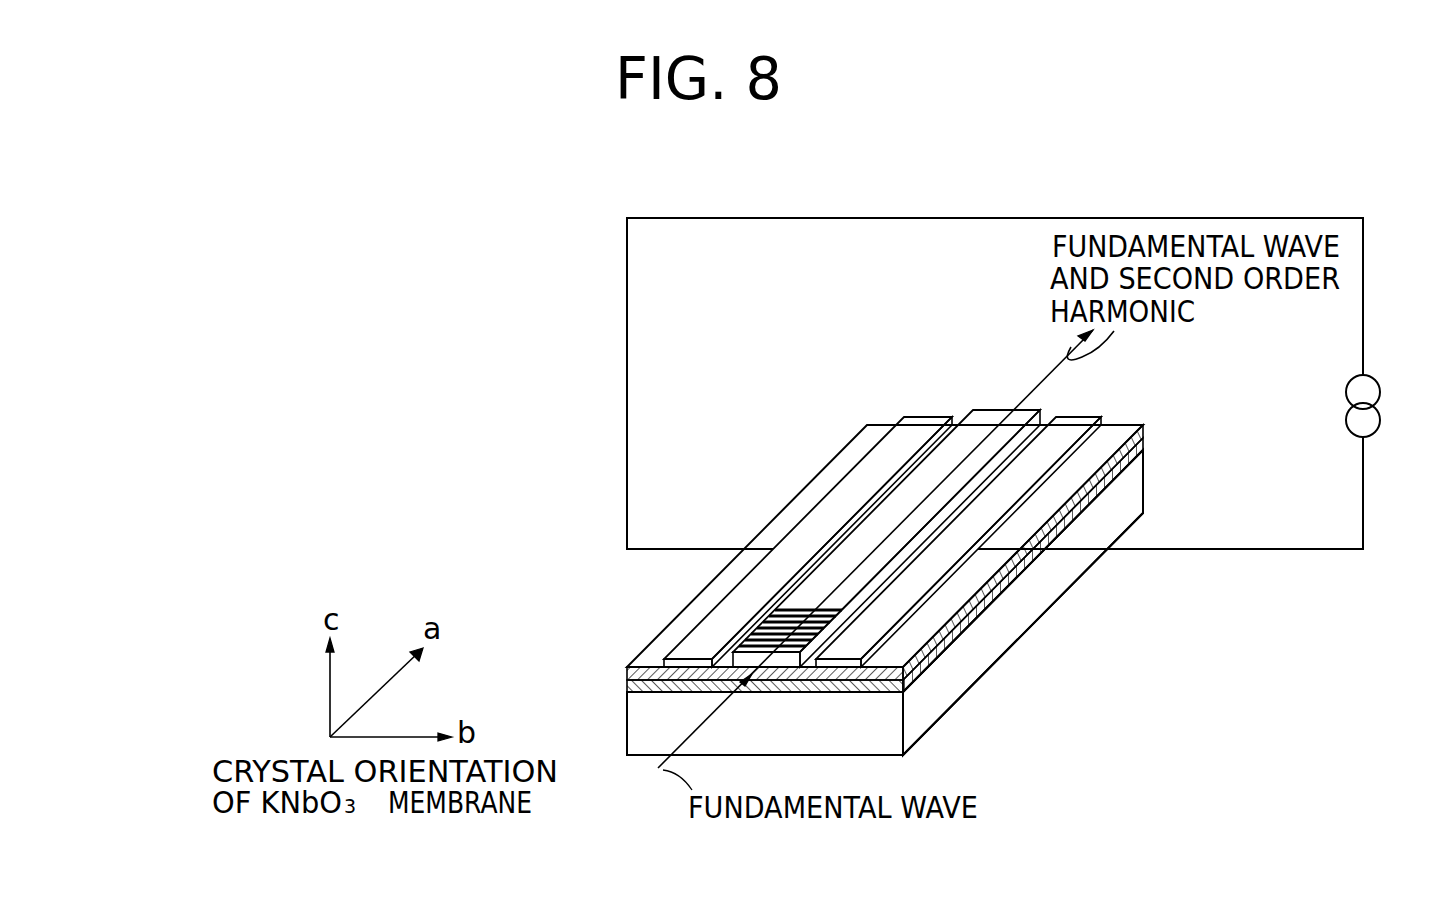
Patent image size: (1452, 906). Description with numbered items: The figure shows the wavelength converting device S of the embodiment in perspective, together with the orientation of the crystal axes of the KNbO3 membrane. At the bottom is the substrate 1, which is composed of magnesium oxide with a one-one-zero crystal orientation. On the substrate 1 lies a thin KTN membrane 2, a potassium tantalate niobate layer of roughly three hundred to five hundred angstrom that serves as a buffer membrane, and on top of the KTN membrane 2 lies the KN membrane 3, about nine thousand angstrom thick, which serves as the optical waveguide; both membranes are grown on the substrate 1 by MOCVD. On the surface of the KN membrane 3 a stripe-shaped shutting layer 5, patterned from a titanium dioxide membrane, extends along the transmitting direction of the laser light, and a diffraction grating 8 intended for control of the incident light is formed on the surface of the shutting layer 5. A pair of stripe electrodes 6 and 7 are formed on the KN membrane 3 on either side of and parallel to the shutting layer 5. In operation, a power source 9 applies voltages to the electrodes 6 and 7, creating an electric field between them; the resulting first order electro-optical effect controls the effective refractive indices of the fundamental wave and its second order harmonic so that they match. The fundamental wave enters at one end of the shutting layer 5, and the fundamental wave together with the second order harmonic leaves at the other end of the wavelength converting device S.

The substrate 1 is at (627, 742).
The KTN membrane 2 is at (627, 686).
The KN membrane 3 is at (627, 670).
The shutting layer 5 is at (1041, 409).
The electrode 6 is at (1099, 403).
The electrode 7 is at (921, 417).
The diffraction grating 8 is at (742, 638).
The power source 9 is at (1382, 410).
The wavelength converting device S is at (1066, 645).